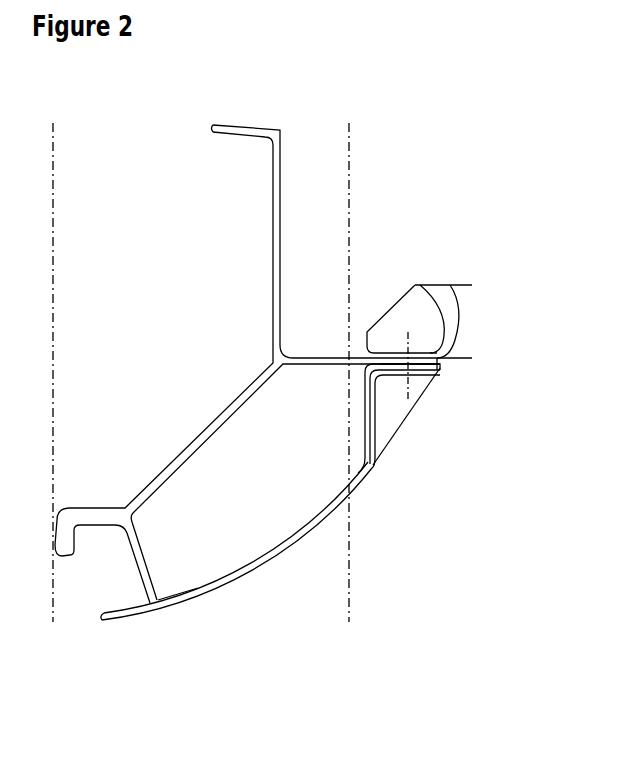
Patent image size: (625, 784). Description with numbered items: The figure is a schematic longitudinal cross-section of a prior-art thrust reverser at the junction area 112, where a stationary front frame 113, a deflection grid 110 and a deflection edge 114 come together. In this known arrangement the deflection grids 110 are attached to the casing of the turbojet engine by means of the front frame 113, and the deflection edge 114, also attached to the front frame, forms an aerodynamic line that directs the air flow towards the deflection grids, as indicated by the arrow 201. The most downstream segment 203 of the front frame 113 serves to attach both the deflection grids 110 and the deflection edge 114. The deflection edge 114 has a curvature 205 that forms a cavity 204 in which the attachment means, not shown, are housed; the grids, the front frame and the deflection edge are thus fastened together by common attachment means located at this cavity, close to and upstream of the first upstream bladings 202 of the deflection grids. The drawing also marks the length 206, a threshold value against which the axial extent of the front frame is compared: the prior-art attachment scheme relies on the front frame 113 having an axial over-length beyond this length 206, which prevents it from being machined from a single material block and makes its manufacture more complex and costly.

The deflection grid 110 is at (460, 285).
The junction area 112 is at (424, 96).
The front frame 113 is at (187, 448).
The deflection edge 114 is at (267, 568).
The arrow 201 is at (260, 661).
The first upstream bladings 202 is at (455, 318).
The most downstream segment 203 is at (440, 363).
The cavity 204 is at (397, 438).
The curvature 205 is at (367, 473).
The length 206 is at (349, 193).